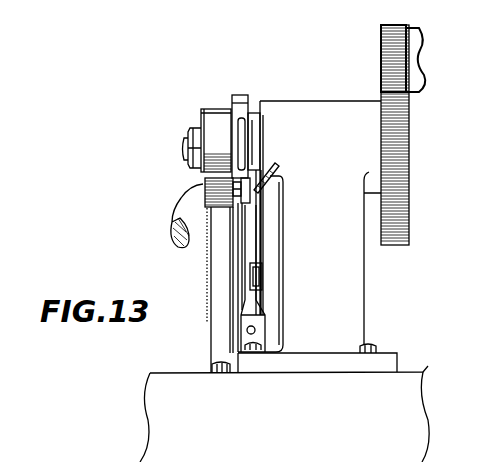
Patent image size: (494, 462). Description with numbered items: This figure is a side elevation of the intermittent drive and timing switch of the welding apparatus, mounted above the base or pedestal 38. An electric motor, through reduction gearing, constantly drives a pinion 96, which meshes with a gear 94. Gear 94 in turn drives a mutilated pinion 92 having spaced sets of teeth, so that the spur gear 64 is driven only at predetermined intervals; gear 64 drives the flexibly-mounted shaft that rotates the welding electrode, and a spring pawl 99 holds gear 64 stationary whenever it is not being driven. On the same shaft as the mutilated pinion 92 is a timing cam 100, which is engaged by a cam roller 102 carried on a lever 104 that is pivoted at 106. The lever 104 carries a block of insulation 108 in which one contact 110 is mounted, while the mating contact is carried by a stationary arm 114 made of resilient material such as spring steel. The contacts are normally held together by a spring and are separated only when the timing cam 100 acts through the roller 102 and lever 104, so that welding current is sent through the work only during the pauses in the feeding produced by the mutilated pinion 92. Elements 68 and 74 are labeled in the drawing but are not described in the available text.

The base 38 is at (395, 421).
The spur gear 64 is at (217, 197).
The member 68 is at (493, 244).
The member 74 is at (477, 212).
The mutilated pinion 92 is at (211, 128).
The gear 94 is at (384, 196).
The pinion 96 is at (388, 48).
The spring pawl 99 is at (225, 233).
The timing cam 100 is at (235, 108).
The cam roller 102 is at (249, 123).
The lever 104 is at (258, 233).
The pivot 106 is at (265, 275).
The block of insulation 108 is at (262, 185).
The contact 110 is at (268, 193).
The stationary arm 114 is at (248, 250).